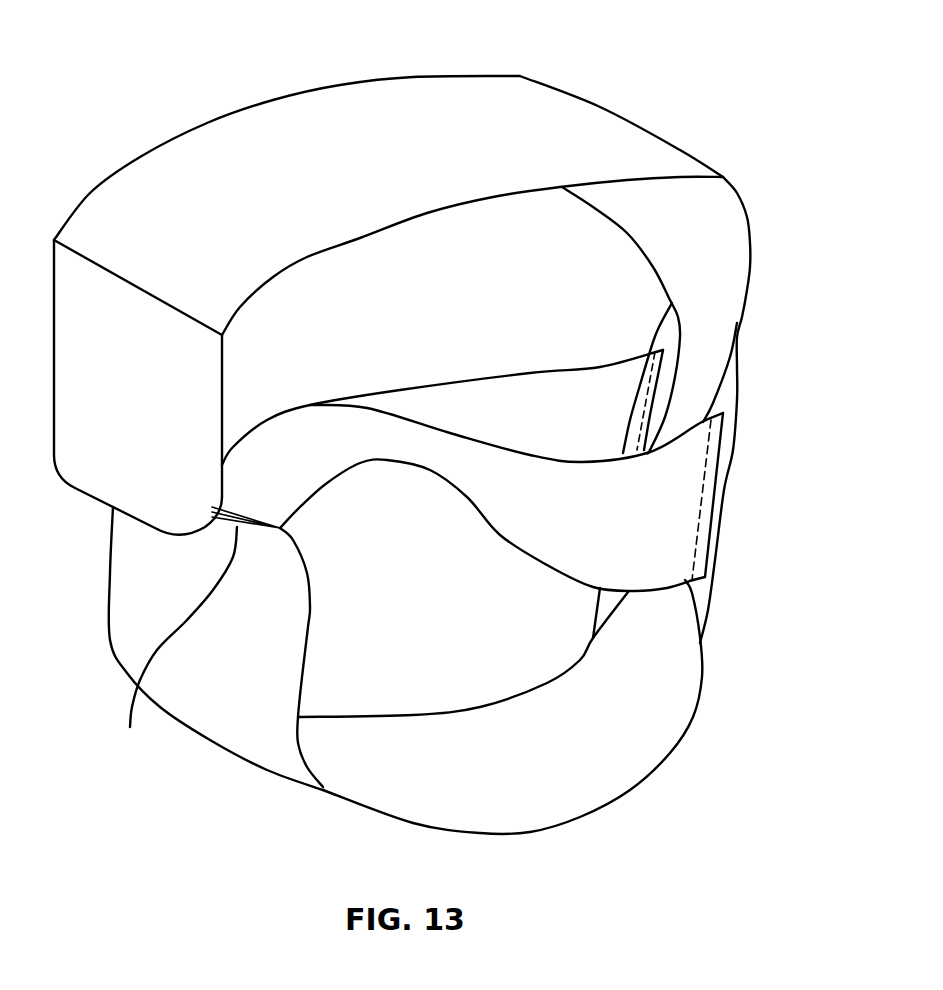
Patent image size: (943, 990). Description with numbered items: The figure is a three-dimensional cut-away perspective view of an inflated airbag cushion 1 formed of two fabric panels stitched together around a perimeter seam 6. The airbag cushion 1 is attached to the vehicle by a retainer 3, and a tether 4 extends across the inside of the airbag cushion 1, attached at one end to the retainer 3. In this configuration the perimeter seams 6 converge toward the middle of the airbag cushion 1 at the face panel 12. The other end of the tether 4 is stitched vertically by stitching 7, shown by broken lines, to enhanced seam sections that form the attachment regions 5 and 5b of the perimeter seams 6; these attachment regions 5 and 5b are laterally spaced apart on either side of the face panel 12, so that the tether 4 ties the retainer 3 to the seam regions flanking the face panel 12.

The airbag cushion 1 is at (332, 113).
The retainer 3 is at (406, 670).
The tether 4 is at (518, 533).
The attachment region 5 is at (720, 490).
The attachment region 5b is at (667, 337).
The perimeter seam 6 is at (750, 238).
The stitching 7 is at (707, 462).
The face panel 12 is at (702, 367).